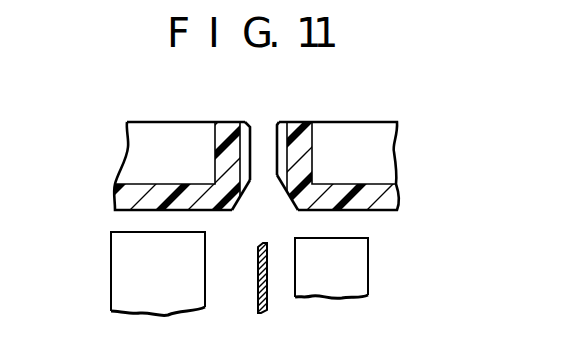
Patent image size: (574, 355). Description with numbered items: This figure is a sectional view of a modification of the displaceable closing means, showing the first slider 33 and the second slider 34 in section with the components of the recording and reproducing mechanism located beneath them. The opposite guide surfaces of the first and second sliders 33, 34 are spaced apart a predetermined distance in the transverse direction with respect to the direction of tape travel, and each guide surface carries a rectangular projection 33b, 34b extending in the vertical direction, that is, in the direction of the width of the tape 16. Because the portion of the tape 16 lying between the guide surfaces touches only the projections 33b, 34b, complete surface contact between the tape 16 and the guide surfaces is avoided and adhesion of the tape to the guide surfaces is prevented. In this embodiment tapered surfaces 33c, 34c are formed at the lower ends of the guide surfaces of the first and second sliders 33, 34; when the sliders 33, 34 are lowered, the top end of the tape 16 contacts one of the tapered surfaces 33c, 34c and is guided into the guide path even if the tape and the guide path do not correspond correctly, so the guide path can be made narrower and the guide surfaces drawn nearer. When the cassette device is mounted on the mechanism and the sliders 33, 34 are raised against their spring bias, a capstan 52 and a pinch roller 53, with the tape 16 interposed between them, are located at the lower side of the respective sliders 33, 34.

The first slider 33 is at (180, 132).
The rectangular projection 33b is at (239, 123).
The tapered surface 33c is at (241, 200).
The second slider 34 is at (371, 131).
The rectangular projection 34b is at (277, 124).
The tapered surface 34c is at (291, 200).
The capstan 52 is at (111, 305).
The tape 16 is at (258, 290).
The pinch roller 53 is at (348, 298).